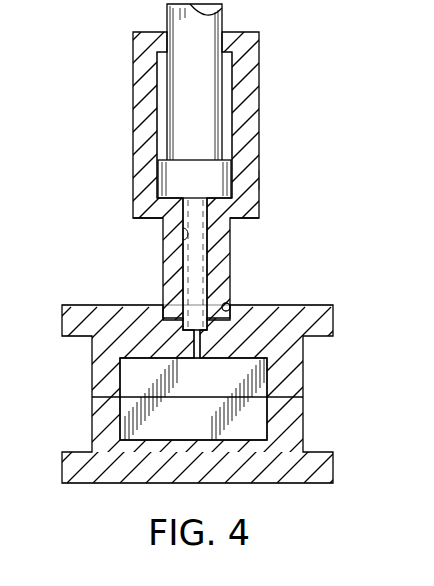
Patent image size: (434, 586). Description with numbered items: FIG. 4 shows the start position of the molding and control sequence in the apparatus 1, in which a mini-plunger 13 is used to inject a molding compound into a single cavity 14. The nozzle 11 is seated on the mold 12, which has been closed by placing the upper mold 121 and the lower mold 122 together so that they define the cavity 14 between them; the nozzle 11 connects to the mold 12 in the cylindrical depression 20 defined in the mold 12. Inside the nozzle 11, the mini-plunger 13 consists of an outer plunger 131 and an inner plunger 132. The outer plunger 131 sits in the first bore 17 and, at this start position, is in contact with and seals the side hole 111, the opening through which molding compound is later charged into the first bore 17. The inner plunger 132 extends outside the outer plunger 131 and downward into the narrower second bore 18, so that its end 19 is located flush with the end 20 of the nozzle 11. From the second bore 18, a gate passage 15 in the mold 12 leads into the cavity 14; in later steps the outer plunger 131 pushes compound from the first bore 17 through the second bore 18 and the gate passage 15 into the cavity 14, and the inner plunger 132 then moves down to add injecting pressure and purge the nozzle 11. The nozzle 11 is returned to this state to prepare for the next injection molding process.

The apparatus 1 is at (332, 182).
The nozzle 11 is at (260, 120).
The side hole 111 is at (260, 180).
The mold 12 is at (334, 394).
The upper mold 121 is at (333, 318).
The lower mold 122 is at (333, 468).
The mini-plunger 13 is at (198, 77).
The outer plunger 131 is at (159, 175).
The inner plunger 132 is at (192, 264).
The cavity 14 is at (122, 415).
The gate passage 15 is at (92, 339).
The first bore 17 is at (160, 111).
The second bore 18 is at (160, 218).
The end of the inner plunger 19 is at (163, 316).
The end of the nozzle 20 is at (230, 304).